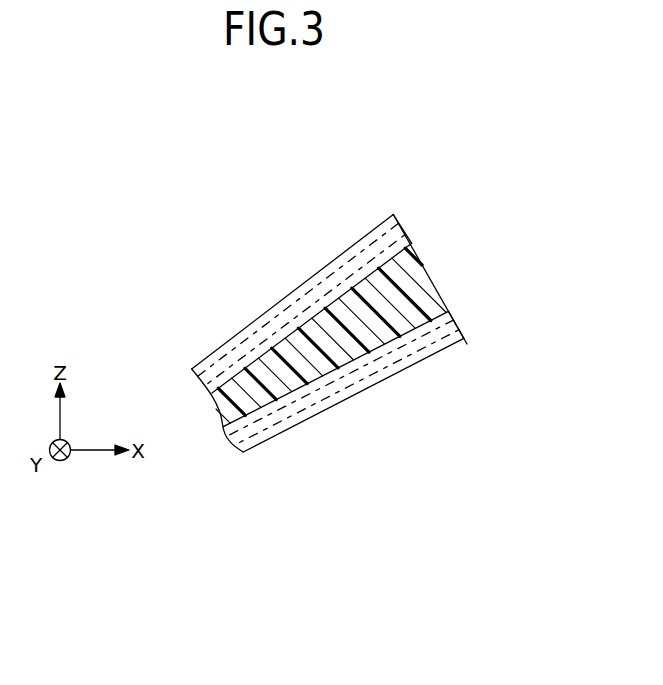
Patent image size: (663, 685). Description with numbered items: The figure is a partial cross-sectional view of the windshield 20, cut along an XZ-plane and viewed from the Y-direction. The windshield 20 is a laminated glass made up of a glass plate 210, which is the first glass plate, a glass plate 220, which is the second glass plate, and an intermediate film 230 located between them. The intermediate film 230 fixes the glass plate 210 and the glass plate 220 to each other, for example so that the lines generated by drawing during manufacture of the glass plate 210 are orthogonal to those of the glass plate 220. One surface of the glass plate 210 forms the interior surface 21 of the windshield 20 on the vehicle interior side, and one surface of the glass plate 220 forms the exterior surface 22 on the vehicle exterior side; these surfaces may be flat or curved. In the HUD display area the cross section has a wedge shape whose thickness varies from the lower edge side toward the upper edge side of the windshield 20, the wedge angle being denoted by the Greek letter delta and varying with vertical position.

The windshield 20 is at (406, 191).
The interior surface 21 is at (390, 376).
The exterior surface 22 is at (317, 272).
The glass plate 210 is at (452, 331).
The glass plate 220 is at (401, 228).
The intermediate film 230 is at (413, 288).